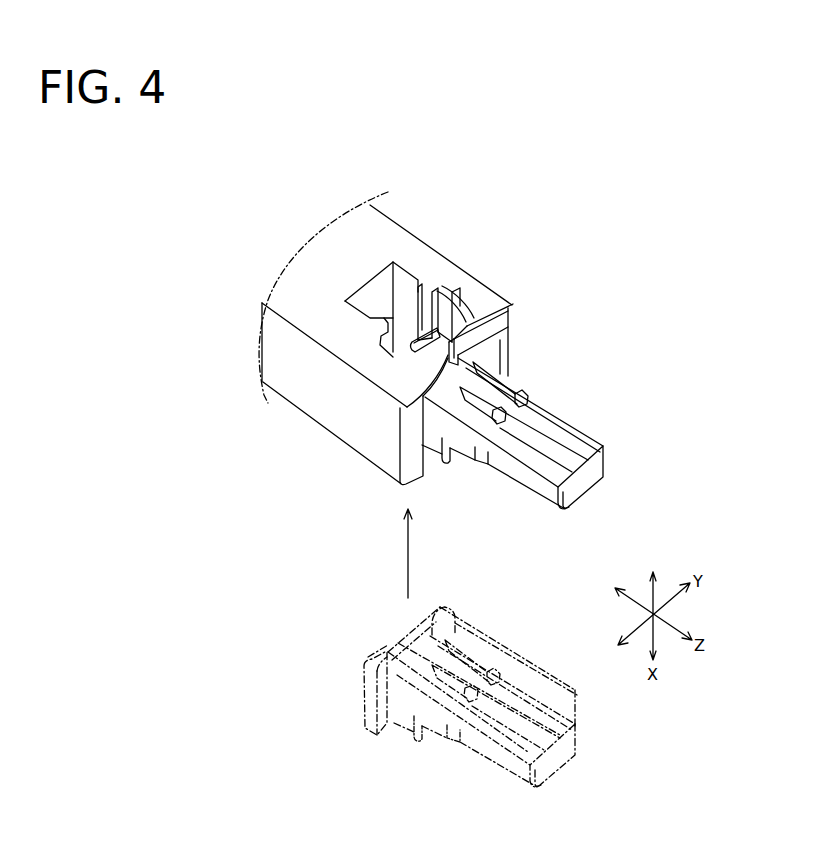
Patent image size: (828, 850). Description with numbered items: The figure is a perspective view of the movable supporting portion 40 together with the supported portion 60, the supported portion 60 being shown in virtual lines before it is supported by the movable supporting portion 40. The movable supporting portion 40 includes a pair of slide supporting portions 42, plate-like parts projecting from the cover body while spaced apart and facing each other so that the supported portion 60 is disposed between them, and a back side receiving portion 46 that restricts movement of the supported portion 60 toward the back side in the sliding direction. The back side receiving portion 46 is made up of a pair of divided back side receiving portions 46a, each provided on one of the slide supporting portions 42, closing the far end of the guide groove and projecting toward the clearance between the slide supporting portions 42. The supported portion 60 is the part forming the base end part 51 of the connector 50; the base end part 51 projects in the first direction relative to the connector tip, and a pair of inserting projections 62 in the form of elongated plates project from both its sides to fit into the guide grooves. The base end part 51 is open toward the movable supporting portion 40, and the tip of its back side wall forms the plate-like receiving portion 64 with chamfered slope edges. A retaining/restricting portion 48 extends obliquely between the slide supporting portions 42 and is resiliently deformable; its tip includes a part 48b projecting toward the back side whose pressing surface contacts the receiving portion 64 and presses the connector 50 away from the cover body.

The movable supporting portion 40 is at (390, 218).
The slide supporting portion 42 is at (350, 432).
The back side receiving portion 46 is at (505, 345).
The divided back side receiving portion 46a is at (465, 330).
The retaining/restricting portion 48 is at (468, 322).
The projecting part of the retaining/restricting portion 48b is at (426, 322).
The connector 50 is at (624, 440).
The base end part of the connector 51 is at (431, 452).
The supported portion 60 is at (442, 606).
The inserting projection 62 is at (455, 630).
The receiving portion 64 is at (390, 643).